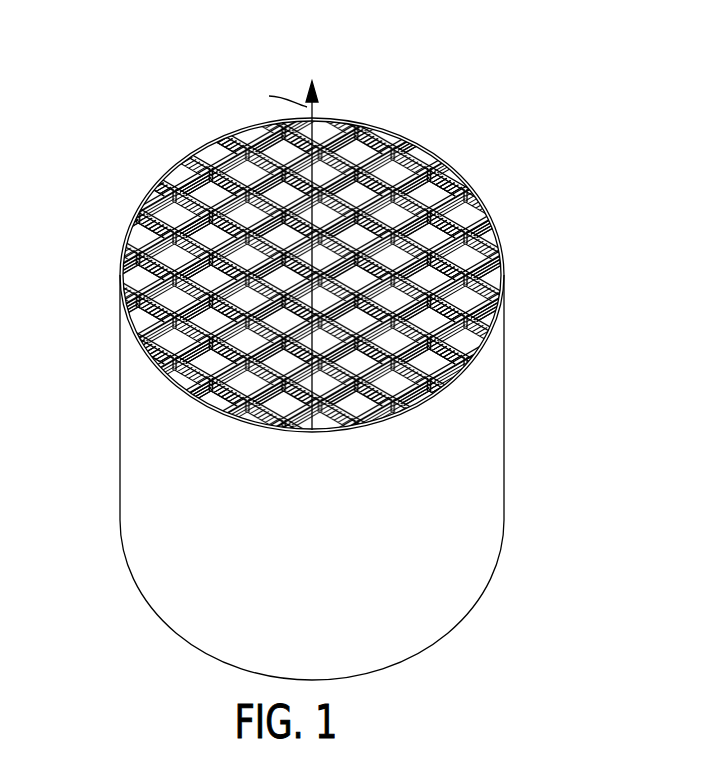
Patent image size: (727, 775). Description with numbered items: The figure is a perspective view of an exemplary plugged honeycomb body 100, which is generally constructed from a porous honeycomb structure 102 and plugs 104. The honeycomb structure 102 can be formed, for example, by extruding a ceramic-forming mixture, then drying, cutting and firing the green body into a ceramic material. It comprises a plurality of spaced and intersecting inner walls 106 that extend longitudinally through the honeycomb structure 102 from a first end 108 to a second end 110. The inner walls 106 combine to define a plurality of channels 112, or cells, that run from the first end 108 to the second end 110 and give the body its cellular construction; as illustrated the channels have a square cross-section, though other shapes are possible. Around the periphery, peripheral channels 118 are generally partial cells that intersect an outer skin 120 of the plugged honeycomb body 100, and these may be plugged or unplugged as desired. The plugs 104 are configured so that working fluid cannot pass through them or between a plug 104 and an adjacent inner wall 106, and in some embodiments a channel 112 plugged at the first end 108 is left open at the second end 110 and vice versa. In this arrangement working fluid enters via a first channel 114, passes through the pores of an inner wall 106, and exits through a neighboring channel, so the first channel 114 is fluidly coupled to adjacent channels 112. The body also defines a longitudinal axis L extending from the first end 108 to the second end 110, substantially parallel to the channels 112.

The plugged honeycomb body 100 is at (562, 227).
The honeycomb structure 102 is at (490, 500).
The plugs 104 is at (392, 143).
The inner walls 106 is at (430, 158).
The first end 108 is at (176, 121).
The second end 110 is at (148, 625).
The channels 112 is at (127, 252).
The first channel 114 is at (200, 203).
The peripheral channels 118 is at (250, 407).
The outer skin 120 is at (332, 543).